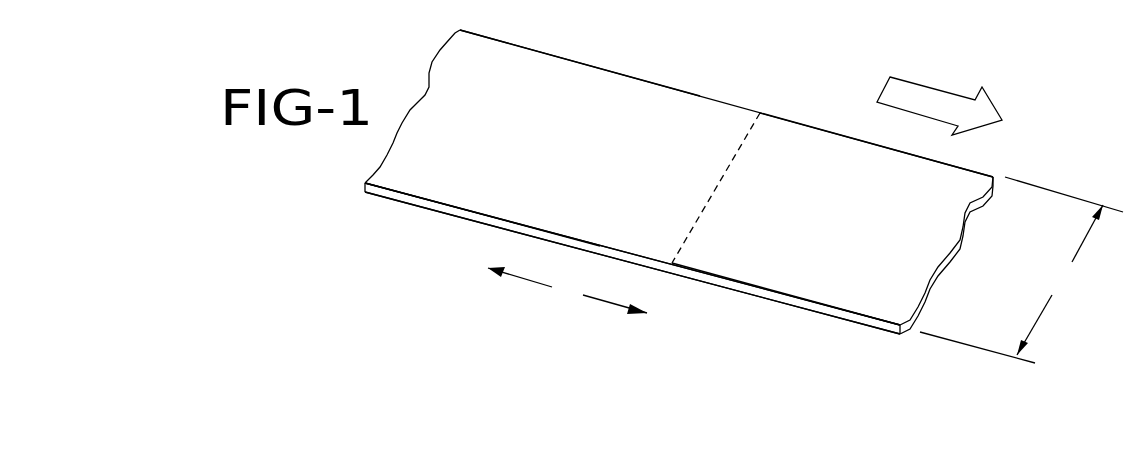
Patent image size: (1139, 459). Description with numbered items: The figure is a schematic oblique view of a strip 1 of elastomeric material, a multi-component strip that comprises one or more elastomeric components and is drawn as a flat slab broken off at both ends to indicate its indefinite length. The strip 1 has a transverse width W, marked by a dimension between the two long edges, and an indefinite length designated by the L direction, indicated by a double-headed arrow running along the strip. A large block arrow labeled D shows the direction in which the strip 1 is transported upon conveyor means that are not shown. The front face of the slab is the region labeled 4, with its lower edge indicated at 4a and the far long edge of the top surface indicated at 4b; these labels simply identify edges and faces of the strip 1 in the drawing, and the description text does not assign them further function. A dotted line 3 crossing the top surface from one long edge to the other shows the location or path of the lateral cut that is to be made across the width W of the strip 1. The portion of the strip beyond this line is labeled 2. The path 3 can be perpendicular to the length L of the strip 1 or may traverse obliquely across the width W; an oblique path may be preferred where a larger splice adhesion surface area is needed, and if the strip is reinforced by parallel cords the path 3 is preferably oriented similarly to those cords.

The strip 1 is at (684, 78).
The sheet body portion 2 is at (887, 282).
The path 3 is at (695, 225).
The front edge of sheet 4 is at (800, 308).
The front edge face 4a is at (455, 213).
The rear edge 4b is at (562, 55).
The direction D is at (939, 94).
The length direction L is at (567, 290).
The transverse width W is at (1021, 270).